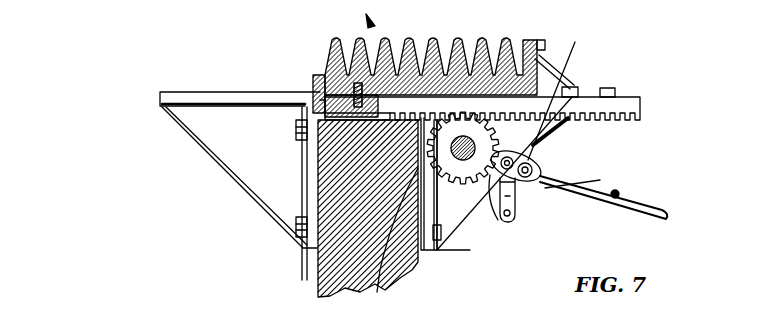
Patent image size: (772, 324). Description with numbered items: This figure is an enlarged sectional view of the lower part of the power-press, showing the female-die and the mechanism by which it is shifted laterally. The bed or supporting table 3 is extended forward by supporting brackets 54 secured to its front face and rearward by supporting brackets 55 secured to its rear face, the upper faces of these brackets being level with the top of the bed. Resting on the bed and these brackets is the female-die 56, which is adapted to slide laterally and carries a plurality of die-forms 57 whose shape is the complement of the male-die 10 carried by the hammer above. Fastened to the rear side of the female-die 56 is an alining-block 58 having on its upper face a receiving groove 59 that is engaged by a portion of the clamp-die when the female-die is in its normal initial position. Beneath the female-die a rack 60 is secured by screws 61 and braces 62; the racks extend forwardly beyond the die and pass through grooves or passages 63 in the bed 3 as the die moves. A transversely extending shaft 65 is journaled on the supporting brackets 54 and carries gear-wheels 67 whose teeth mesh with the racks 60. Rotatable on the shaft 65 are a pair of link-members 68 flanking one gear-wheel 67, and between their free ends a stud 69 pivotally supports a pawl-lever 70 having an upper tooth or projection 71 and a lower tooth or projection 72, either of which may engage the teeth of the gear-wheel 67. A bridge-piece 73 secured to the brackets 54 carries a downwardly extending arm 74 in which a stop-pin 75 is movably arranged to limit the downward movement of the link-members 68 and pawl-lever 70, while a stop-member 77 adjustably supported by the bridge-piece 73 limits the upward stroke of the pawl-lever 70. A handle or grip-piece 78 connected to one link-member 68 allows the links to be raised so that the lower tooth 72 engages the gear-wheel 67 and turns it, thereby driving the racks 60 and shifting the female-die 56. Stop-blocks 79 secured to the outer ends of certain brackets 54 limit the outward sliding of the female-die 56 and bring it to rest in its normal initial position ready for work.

The bed or supporting table 3 is at (400, 263).
The male-die 10 is at (366, 20).
The supporting brackets 54 is at (595, 133).
The supporting brackets 55 is at (222, 93).
The female-die 56 is at (538, 63).
The die-forms 57 is at (445, 38).
The alining-block 58 is at (317, 80).
The receiving groove 59 is at (323, 73).
The racks 60 is at (641, 104).
The screws 61 is at (330, 163).
The braces 62 is at (577, 82).
The grooves or passages 63 is at (323, 133).
The shaft 65 is at (378, 285).
The gear-wheels 67 is at (463, 162).
The link-members 68 is at (444, 246).
The stud 69 is at (580, 178).
The pawl-lever 70 is at (622, 190).
The upper tooth or projection 71 is at (540, 170).
The lower tooth or projection 72 is at (505, 225).
The bridge-piece 73 is at (553, 78).
The downwardly extending arm 74 is at (520, 215).
The stop-pin 75 is at (515, 222).
The stop-member 77 is at (555, 128).
The handle or grip-piece 78 is at (520, 196).
The stop-blocks 79 is at (604, 89).